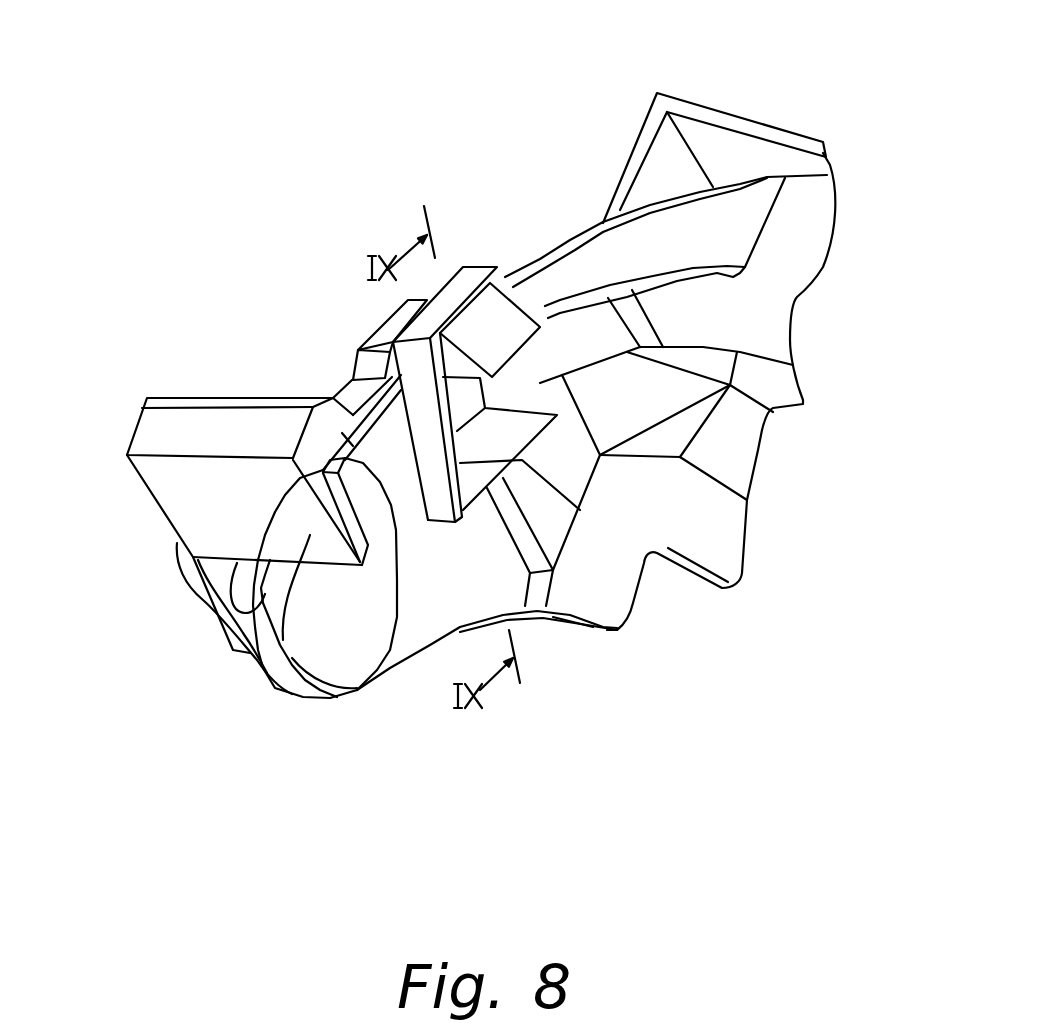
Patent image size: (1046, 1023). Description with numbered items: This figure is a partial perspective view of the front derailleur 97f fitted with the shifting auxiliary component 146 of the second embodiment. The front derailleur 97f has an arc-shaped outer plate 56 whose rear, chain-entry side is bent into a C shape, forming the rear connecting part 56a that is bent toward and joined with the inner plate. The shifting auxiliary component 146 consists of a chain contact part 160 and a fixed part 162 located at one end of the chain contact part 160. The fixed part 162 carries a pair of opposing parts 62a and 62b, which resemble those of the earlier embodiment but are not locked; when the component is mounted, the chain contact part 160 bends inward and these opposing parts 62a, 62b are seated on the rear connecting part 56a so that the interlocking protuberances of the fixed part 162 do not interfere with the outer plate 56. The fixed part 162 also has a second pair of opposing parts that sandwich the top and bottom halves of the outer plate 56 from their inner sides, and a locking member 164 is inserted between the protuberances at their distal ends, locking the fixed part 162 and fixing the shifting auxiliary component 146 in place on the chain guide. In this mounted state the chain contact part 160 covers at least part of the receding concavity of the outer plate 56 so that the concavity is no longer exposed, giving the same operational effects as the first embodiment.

The shifting auxiliary component 146 is at (206, 386).
The chain contact part 160 is at (350, 380).
The fixed part 162 is at (377, 327).
The locking member 164 is at (468, 262).
The front derailleur 97f is at (560, 150).
The outer plate 56 is at (797, 297).
The rear connecting part 56a is at (223, 615).
The opposing part 62a is at (397, 617).
The opposing part 62b is at (258, 655).